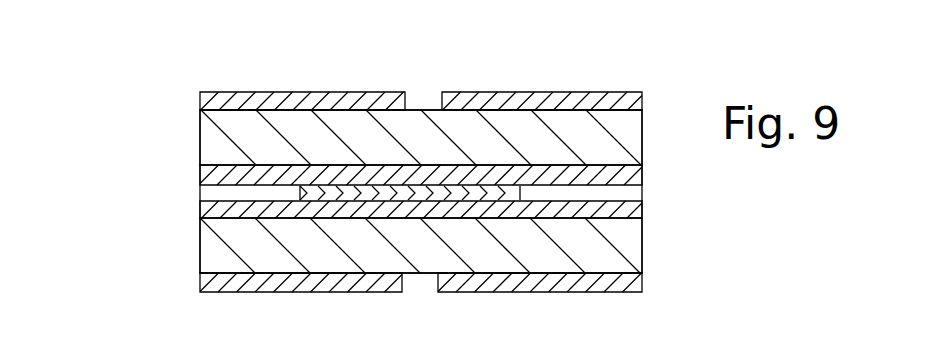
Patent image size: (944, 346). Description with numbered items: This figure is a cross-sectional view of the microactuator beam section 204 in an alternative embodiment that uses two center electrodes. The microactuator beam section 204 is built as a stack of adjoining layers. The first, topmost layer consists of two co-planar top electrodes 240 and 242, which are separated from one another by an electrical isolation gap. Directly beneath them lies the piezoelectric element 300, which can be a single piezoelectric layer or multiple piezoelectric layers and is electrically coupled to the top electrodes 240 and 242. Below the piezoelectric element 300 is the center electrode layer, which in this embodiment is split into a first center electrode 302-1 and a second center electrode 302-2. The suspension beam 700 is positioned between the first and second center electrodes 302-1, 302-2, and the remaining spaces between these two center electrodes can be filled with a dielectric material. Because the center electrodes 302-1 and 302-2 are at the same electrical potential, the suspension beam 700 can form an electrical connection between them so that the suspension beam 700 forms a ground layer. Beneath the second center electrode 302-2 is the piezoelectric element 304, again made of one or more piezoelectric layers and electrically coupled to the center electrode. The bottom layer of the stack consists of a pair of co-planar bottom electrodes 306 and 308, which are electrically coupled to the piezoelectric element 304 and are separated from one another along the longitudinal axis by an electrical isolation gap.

The microactuator beam section 204 is at (158, 85).
The top electrode 242 is at (268, 92).
The top electrode 240 is at (572, 91).
The piezoelectric element 300 is at (200, 140).
The first center electrode 302-1 is at (200, 173).
The second center electrode 302-2 is at (200, 209).
The piezoelectric element 304 is at (200, 248).
The bottom electrode 308 is at (232, 293).
The bottom electrode 306 is at (592, 292).
The suspension beam 700 is at (520, 194).